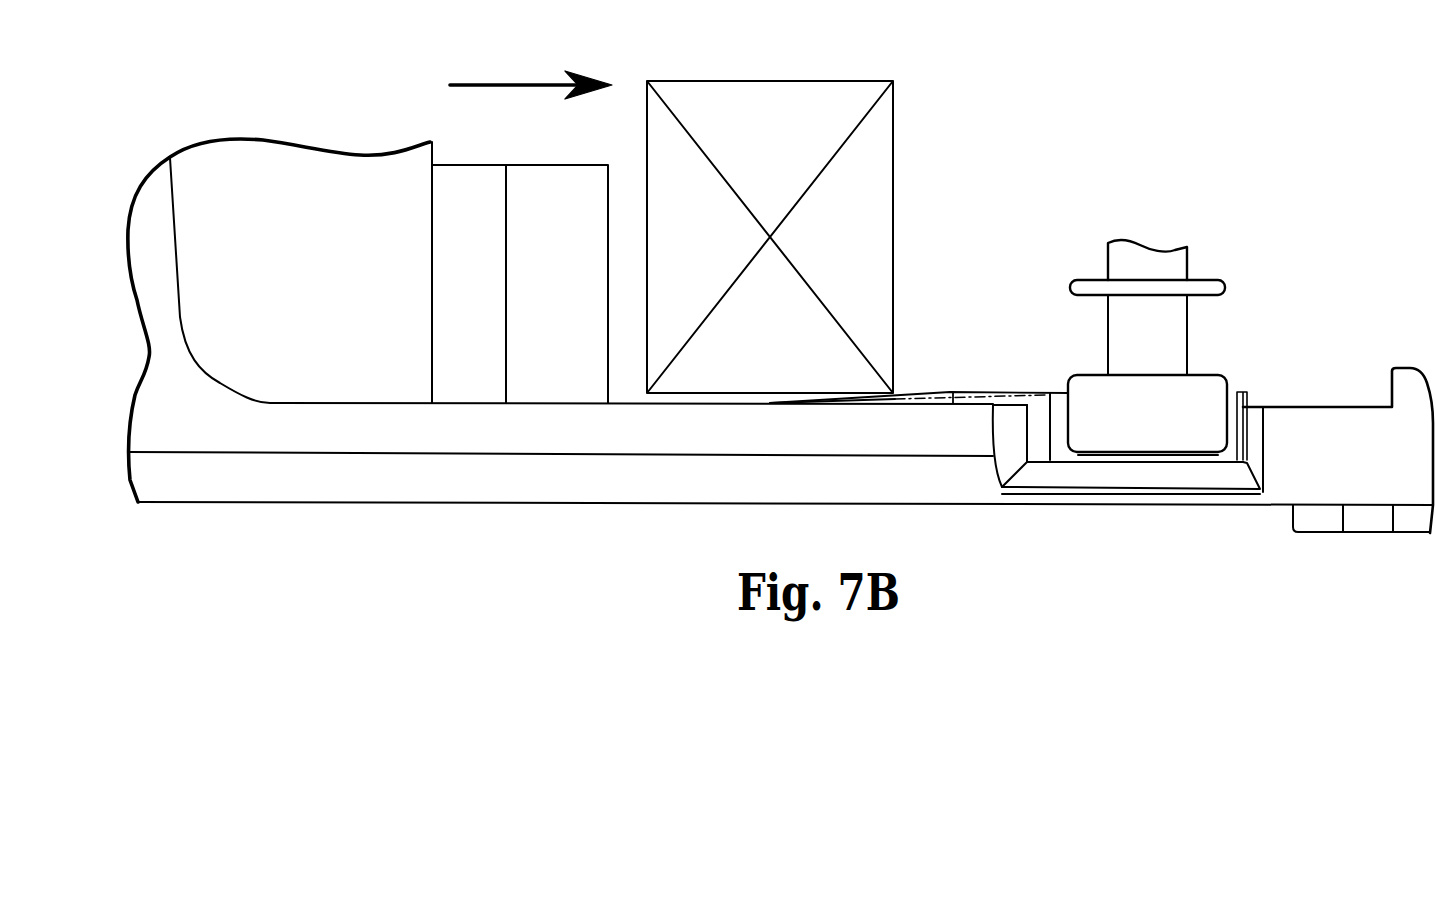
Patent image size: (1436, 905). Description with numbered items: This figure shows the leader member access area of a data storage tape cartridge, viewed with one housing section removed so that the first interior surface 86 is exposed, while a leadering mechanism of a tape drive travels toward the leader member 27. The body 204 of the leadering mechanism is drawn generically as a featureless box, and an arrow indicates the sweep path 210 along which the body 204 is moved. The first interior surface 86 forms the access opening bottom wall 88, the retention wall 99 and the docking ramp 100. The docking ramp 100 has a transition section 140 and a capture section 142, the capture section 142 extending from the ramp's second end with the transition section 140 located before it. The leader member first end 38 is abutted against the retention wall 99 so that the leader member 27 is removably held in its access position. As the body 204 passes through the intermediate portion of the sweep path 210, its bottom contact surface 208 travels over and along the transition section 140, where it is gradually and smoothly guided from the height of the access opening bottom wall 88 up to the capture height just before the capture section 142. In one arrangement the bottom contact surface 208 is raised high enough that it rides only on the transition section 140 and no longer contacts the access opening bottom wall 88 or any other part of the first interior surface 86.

The leader member 27 is at (1198, 347).
The leader member first end 38 is at (1215, 388).
The first interior surface 86 is at (636, 374).
The access opening bottom wall 88 is at (637, 420).
The retention wall 99 is at (1055, 378).
The docking ramp 100 is at (959, 379).
The transition section 140 is at (925, 395).
The capture section 142 is at (978, 395).
The body 204 is at (903, 92).
The bottom contact surface 208 is at (715, 395).
The sweep path 210 is at (505, 83).